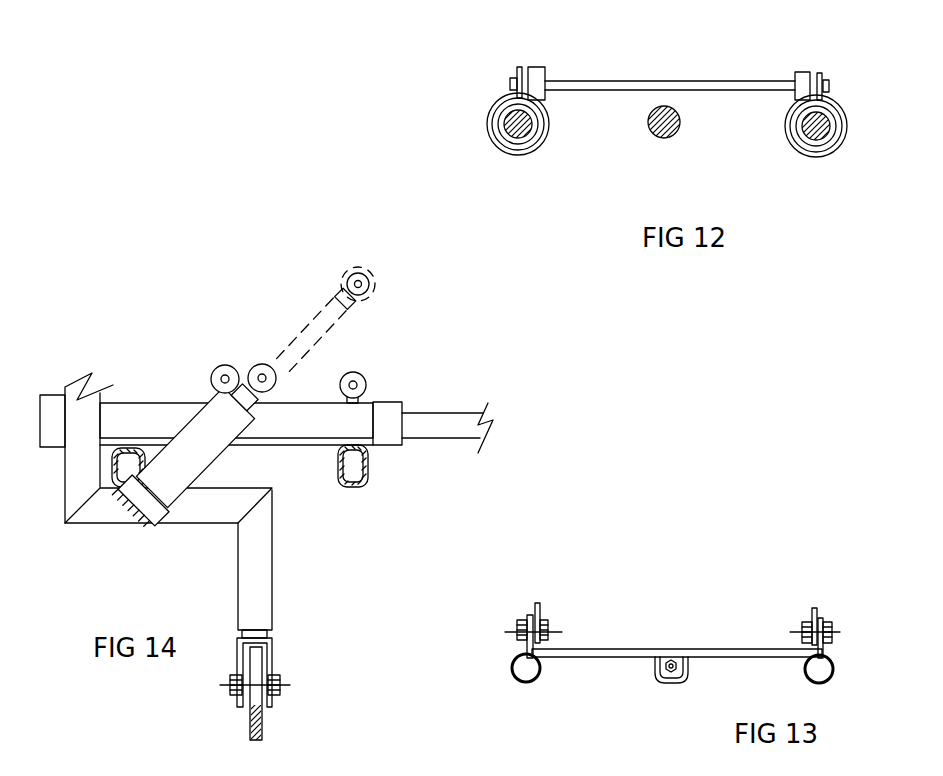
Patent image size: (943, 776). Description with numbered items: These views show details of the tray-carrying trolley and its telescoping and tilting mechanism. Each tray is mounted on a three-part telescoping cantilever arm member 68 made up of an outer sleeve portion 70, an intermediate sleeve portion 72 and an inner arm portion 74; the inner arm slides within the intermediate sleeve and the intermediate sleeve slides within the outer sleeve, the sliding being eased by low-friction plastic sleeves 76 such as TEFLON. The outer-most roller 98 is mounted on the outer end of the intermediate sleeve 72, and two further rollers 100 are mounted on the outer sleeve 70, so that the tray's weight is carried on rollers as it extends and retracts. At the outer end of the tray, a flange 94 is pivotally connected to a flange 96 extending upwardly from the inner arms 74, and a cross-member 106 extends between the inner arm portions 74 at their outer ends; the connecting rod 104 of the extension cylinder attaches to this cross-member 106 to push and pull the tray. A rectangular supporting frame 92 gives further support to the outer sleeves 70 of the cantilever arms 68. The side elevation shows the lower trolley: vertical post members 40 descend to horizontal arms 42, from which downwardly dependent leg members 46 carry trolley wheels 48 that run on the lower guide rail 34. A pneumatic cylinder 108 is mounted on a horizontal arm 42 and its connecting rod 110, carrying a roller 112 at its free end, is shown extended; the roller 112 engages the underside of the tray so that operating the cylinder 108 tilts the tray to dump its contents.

In FIG. 14, the lower guide rail 34 is at (262, 738).
In FIG. 14, the vertical post member 40 is at (70, 484).
In FIG. 14, the horizontal arm 42 is at (205, 523).
In FIG. 14, the leg member 46 is at (273, 570).
In FIG. 14, the trolley wheel 48 is at (273, 667).
In FIG. 14, the telescoping cantilever arm member 68 is at (410, 368).
In FIG. 12, the outer sleeve portion 70 is at (496, 102).
In FIG. 14, the outer sleeve portion 70 is at (160, 403).
In FIG. 12, the intermediate sleeve portion 72 is at (530, 150).
In FIG. 14, the intermediate sleeve portion 72 is at (468, 412).
In FIG. 12, the inner arm portion 74 is at (506, 140).
In FIG. 13, the inner arm portion 74 is at (514, 676).
In FIG. 12, the plastic sleeve 76 is at (532, 126).
In FIG. 14, the rectangular supporting frame 92 is at (352, 487).
In FIG. 13, the flange 94 is at (536, 612).
In FIG. 13, the flange 96 is at (524, 650).
In FIG. 12, the outer-most roller 98 is at (548, 67).
In FIG. 14, the roller 100 is at (222, 365).
In FIG. 12, the connecting rod 104 is at (666, 138).
In FIG. 13, the connecting rod 104 is at (668, 682).
In FIG. 13, the cross-member 106 is at (730, 648).
In FIG. 14, the pneumatic cylinder 108 is at (192, 455).
In FIG. 14, the connecting rod 110 is at (306, 328).
In FIG. 14, the roller 112 is at (352, 272).